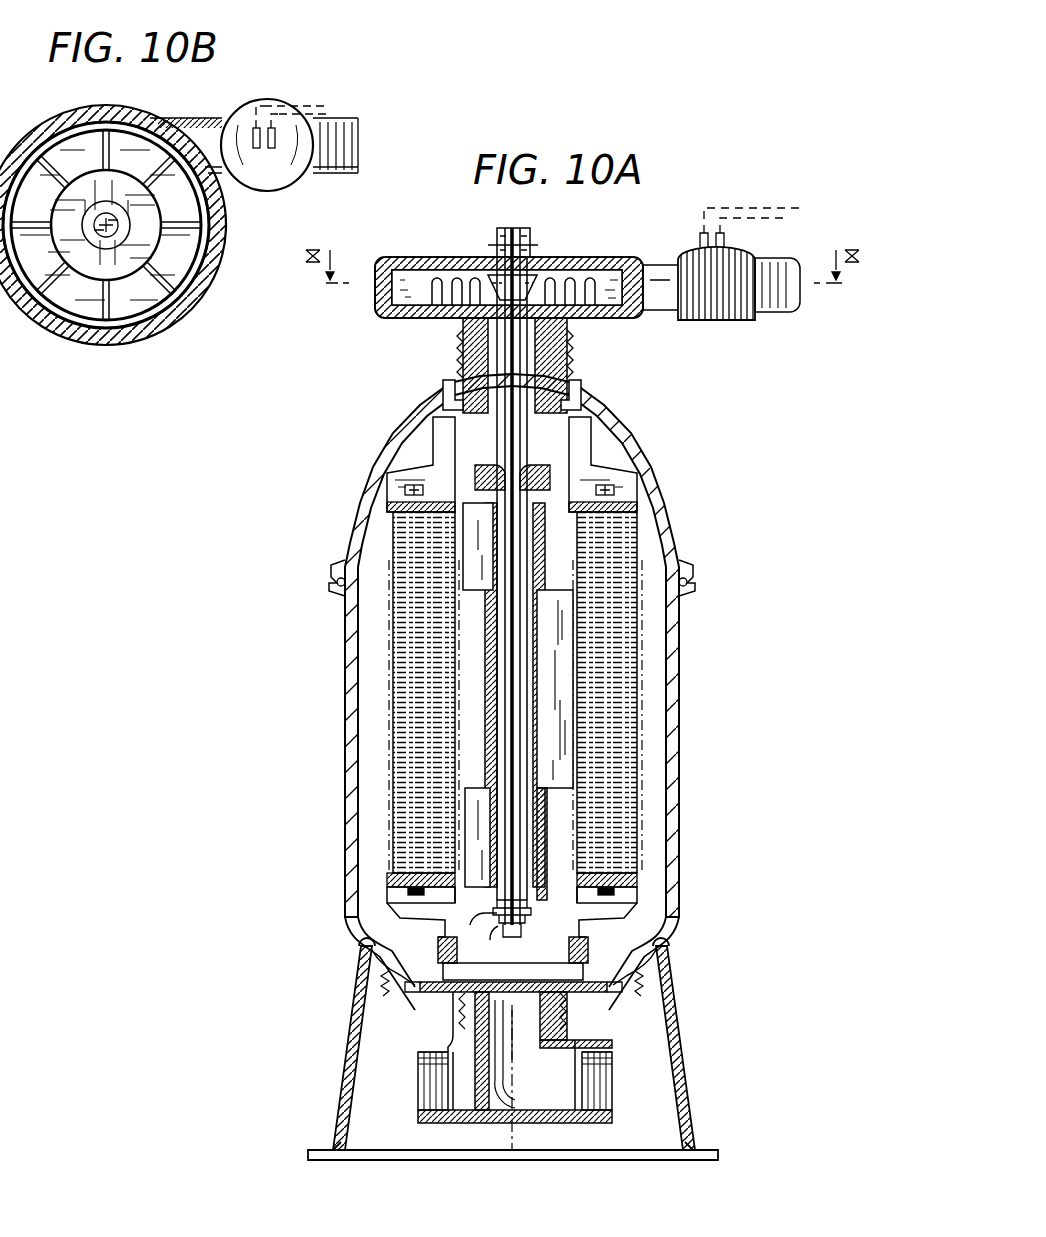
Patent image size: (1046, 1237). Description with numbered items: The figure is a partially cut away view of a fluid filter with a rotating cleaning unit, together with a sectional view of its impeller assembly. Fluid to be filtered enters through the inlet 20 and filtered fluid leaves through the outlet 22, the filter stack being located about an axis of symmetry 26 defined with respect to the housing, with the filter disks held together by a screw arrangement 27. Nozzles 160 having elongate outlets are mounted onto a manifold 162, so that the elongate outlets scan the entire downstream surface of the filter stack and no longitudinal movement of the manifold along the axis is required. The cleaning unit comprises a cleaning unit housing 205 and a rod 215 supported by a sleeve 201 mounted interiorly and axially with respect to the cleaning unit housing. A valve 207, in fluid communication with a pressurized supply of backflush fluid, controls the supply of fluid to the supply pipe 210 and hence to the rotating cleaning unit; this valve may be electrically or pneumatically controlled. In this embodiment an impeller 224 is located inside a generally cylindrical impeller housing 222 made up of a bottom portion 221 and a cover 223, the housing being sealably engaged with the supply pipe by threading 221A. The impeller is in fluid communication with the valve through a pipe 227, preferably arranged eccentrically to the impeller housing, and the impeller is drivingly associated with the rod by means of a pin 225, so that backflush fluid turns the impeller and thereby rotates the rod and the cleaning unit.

In FIG. 10A, the inlet 20 is at (418, 1102).
In FIG. 10A, the outlet 22 is at (608, 1086).
In FIG. 10A, the axis of symmetry 26 is at (518, 1128).
In FIG. 10A, the screw arrangement 27 is at (612, 490).
In FIG. 10A, the nozzles 160 is at (470, 792).
In FIG. 10A, the manifold 162 is at (548, 856).
In FIG. 10A, the sleeve 201 is at (540, 925).
In FIG. 10A, the cleaning unit housing 205 is at (548, 578).
In FIG. 10B, the valve 207 is at (270, 191).
In FIG. 10A, the valve 207 is at (750, 320).
In FIG. 10A, the supply pipe 210 is at (570, 412).
In FIG. 10A, the rod 215 is at (515, 442).
In FIG. 10B, the bottom portion 221 is at (78, 343).
In FIG. 10A, the bottom portion 221 is at (606, 318).
In FIG. 10A, the cap neck 221A is at (466, 332).
In FIG. 10A, the impeller housing 222 is at (647, 258).
In FIG. 10A, the cover 223 is at (612, 265).
In FIG. 10B, the impeller 224 is at (160, 322).
In FIG. 10A, the impeller 224 is at (425, 276).
In FIG. 10B, the pin 225 is at (216, 282).
In FIG. 10A, the pin 225 is at (541, 270).
In FIG. 10B, the pipe 227 is at (170, 127).